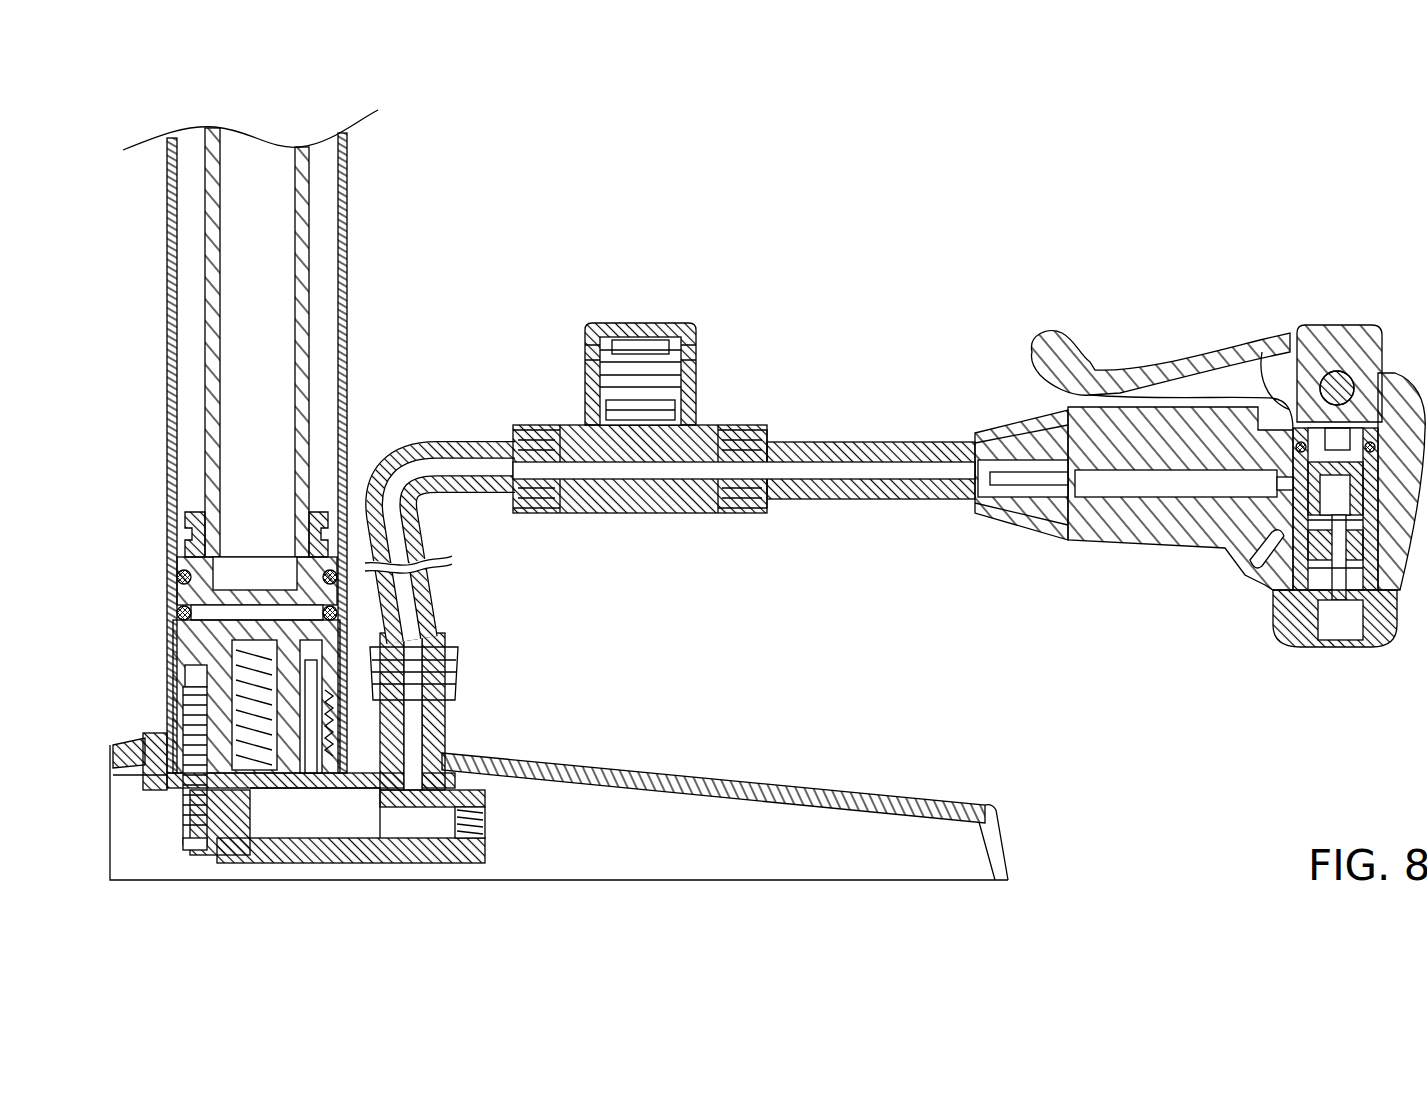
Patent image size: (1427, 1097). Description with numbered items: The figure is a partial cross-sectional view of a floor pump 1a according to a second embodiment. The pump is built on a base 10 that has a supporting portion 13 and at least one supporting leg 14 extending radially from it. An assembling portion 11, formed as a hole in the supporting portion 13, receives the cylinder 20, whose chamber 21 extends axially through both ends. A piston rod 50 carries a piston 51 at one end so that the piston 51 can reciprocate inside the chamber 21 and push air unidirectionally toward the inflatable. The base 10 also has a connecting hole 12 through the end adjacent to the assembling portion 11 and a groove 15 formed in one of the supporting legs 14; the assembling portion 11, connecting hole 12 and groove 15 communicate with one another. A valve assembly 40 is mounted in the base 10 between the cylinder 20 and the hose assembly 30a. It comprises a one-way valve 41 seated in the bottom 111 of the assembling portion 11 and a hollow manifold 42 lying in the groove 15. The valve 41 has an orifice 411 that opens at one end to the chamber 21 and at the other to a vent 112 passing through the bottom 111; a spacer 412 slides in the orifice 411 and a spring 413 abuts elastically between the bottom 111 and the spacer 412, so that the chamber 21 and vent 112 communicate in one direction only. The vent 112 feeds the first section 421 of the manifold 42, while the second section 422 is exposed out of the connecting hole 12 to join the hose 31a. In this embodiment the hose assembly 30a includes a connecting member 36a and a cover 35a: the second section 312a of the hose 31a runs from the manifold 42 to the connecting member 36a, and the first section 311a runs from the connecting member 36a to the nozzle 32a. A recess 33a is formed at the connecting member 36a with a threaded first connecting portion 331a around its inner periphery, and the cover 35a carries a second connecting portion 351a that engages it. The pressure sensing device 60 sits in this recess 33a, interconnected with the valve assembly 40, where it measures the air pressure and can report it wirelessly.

The floor pump 1a is at (895, 358).
The base 10 is at (556, 781).
The assembling portion 11 is at (280, 808).
The bottom 111 is at (158, 795).
The vent 112 is at (290, 815).
The connecting hole 12 is at (455, 711).
The supporting portion 13 is at (167, 706).
The supporting leg 14 is at (780, 788).
The groove 15 is at (725, 792).
The cylinder 20 is at (299, 441).
The chamber 21 is at (345, 240).
The hose assembly 30a is at (895, 419).
The hose 31a is at (454, 505).
The first section 311a is at (858, 500).
The second section 312a is at (462, 440).
The nozzle 32a is at (1115, 540).
The recess 33a is at (688, 403).
The first connecting portion 331a is at (588, 357).
The cover 35a is at (642, 319).
The second connecting portion 351a is at (663, 323).
The connecting member 36a is at (635, 515).
The valve assembly 40 is at (334, 858).
The valve 41 is at (226, 734).
The orifice 411 is at (184, 613).
The spacer 412 is at (240, 690).
The spring 413 is at (232, 835).
The manifold 42 is at (437, 862).
The first section 421 is at (252, 805).
The second section 422 is at (455, 700).
The piston rod 50 is at (320, 377).
The piston 51 is at (325, 512).
The pressure sensing device 60 is at (622, 340).